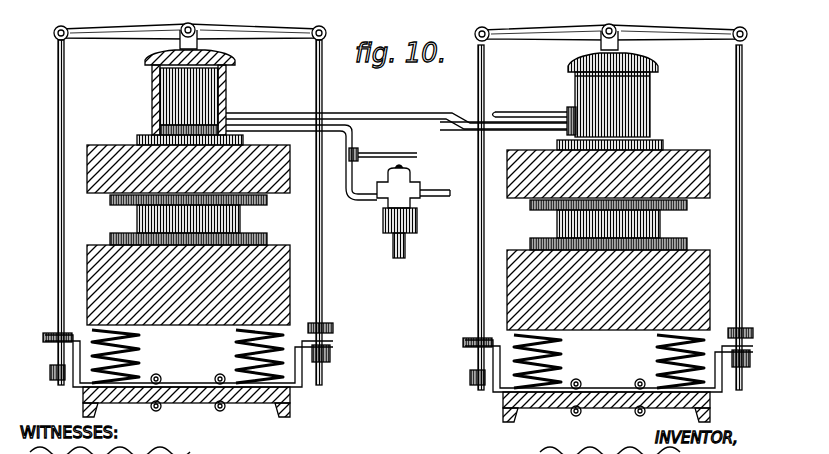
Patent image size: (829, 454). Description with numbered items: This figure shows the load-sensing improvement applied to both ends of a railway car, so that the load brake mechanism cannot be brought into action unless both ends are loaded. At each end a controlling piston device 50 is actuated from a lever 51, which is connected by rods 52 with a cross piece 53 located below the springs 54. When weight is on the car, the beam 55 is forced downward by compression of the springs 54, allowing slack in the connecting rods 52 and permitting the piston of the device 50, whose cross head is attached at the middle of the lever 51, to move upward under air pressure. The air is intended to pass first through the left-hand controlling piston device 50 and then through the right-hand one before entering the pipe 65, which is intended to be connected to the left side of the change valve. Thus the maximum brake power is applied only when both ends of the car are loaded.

The controlling piston device 50 is at (228, 86).
The lever 51 is at (127, 32).
The rod 52 is at (58, 227).
The cross piece 53 is at (302, 386).
The springs 54 is at (230, 352).
The beam 55 is at (118, 152).
The pipe 65 is at (555, 112).